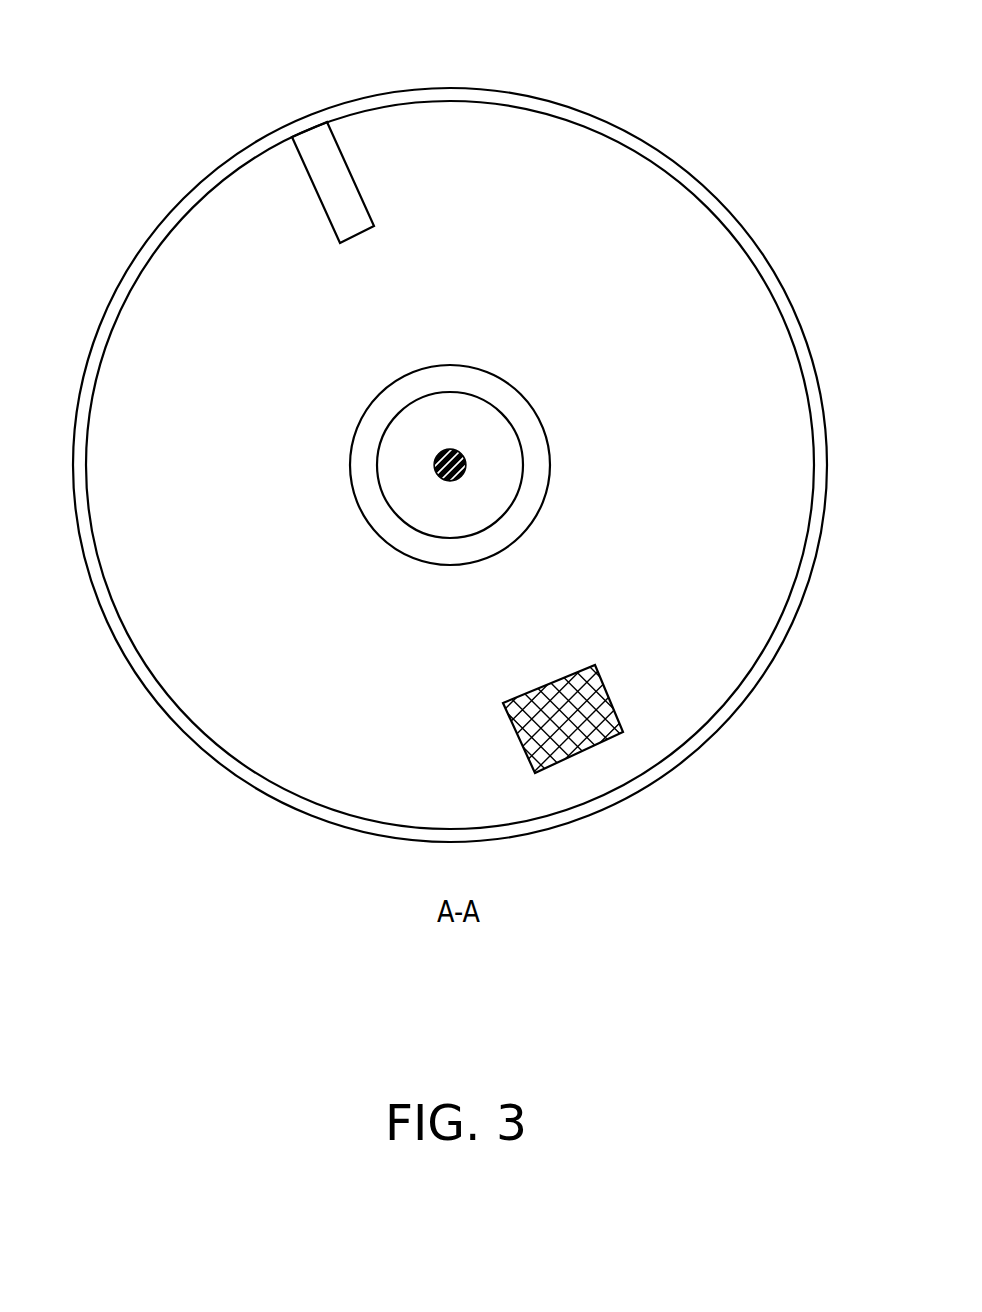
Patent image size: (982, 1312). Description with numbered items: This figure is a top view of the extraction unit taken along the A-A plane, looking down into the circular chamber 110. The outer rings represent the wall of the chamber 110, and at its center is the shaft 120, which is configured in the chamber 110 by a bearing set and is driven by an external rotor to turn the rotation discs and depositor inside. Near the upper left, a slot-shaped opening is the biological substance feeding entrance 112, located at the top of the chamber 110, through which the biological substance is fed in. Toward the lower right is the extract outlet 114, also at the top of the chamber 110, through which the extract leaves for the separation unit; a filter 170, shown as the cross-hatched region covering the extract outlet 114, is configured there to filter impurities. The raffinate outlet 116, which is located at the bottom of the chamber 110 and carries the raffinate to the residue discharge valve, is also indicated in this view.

The chamber 110 is at (822, 437).
The biological substance feeding entrance 112 is at (335, 180).
The extract outlet 114 is at (595, 703).
The raffinate outlet 116 is at (488, 172).
The shaft 120 is at (443, 452).
The filter 170 is at (582, 745).